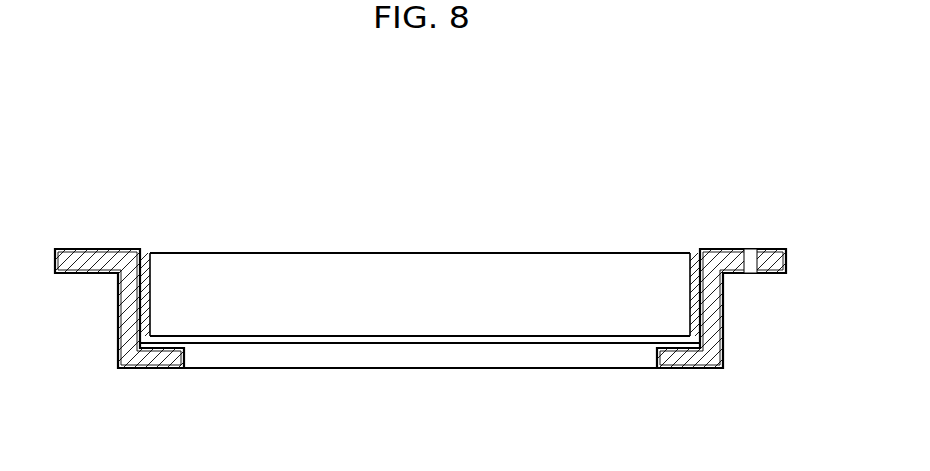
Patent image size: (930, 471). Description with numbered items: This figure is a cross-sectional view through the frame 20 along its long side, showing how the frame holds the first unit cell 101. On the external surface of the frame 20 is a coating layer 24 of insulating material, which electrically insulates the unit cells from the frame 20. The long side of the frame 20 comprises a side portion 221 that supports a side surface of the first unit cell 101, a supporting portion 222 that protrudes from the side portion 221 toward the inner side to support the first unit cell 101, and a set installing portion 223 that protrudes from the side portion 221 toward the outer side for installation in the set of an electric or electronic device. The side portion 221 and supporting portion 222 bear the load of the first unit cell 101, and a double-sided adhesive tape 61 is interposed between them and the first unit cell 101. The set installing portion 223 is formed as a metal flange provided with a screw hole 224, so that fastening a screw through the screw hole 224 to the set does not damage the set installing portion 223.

The frame 20 is at (423, 301).
The coating layer 24 is at (112, 250).
The double-sided adhesive tape 61 is at (150, 290).
The first unit cell 101 is at (413, 262).
The side portion 221 is at (130, 311).
The supporting portion 222 is at (165, 358).
The set installing portion 223 is at (78, 262).
The screw hole 224 is at (749, 272).